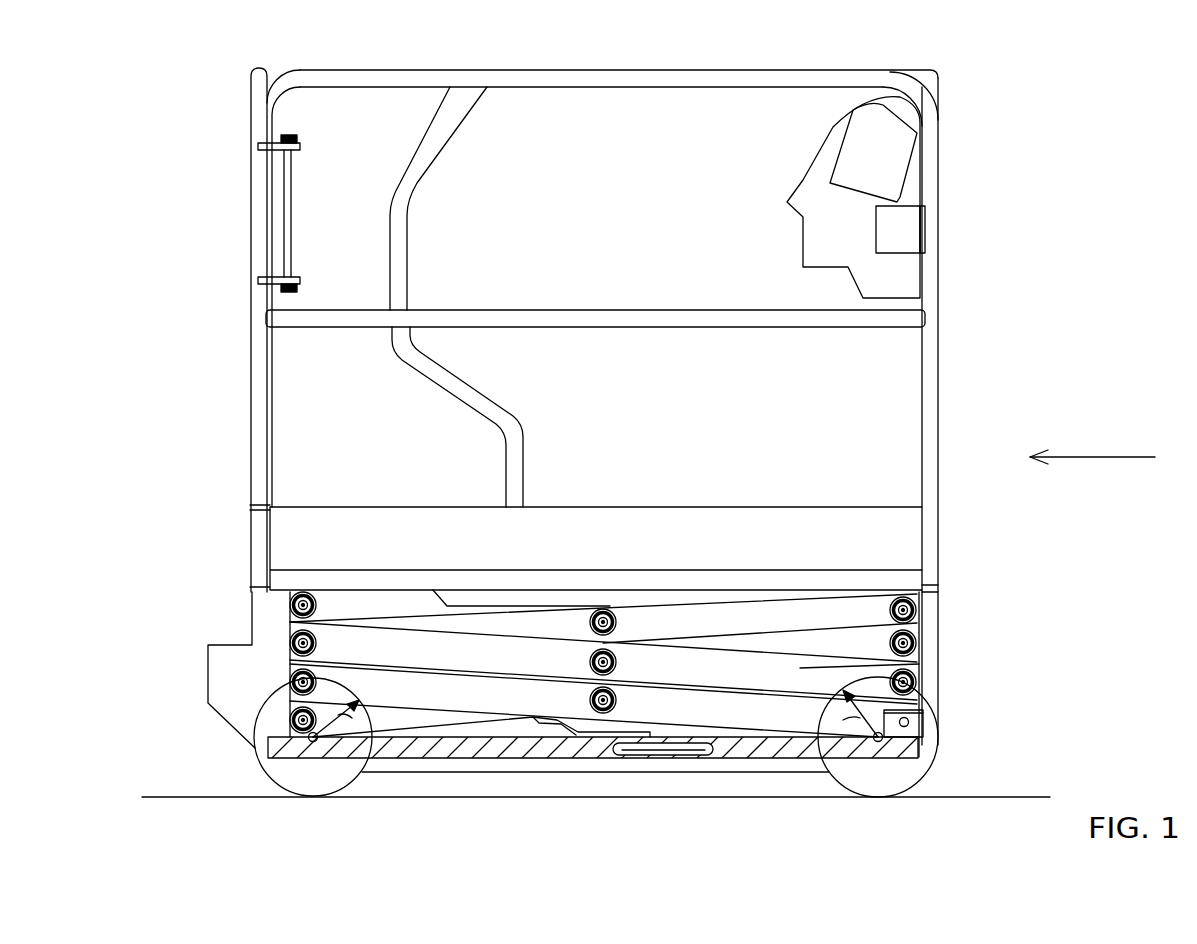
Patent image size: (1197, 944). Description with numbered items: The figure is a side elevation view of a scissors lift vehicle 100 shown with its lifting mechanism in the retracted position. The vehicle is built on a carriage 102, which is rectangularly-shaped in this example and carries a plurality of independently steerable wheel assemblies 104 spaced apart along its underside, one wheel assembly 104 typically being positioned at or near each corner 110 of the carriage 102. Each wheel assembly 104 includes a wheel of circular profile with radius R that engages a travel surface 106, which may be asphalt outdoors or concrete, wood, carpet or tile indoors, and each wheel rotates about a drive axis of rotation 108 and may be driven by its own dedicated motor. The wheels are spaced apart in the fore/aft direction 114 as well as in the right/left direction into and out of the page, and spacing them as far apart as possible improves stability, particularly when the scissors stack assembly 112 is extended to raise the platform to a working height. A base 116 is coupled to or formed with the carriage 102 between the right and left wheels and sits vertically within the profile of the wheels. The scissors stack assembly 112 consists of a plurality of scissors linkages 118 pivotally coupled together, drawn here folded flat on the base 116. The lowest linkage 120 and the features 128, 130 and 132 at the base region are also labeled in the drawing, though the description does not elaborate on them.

The scissors lift vehicle 100 is at (1037, 149).
The carriage 102 is at (228, 672).
The wheel assembly 104 is at (282, 778).
The travel surface 106 is at (918, 810).
The drive axis of rotation 108 is at (316, 742).
The corner 110 is at (235, 717).
The scissors stack assembly 112 is at (920, 615).
The fore/aft direction 114 is at (1082, 457).
The base 116 is at (518, 750).
The scissors linkage 118 is at (579, 636).
The lowest scissor arm 120 is at (584, 719).
The pothole guard slot 128 is at (633, 748).
The pothole guard bar 130 is at (703, 748).
The base bottom plate 132 is at (623, 764).